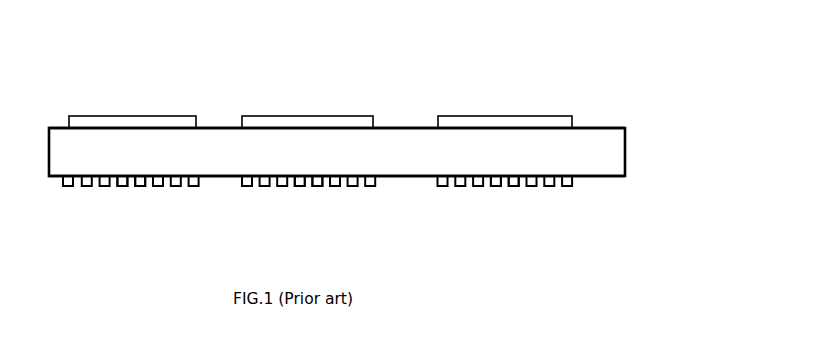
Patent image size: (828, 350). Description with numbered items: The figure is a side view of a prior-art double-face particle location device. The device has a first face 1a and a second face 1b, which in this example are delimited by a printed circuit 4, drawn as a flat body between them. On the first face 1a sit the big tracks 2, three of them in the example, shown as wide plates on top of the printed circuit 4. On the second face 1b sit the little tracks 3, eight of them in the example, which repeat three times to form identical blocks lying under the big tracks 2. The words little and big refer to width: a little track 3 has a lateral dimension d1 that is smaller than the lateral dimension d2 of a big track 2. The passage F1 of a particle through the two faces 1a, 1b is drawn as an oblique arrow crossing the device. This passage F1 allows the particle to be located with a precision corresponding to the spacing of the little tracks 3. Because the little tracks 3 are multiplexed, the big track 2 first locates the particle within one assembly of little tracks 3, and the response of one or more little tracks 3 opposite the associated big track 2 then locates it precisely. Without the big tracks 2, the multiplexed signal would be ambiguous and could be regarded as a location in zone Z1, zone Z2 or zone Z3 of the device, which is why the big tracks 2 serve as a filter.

The first face 1a is at (598, 115).
The second face 1b is at (586, 187).
The big track 2 is at (469, 123).
The little track 3 is at (481, 188).
The printed circuit 4 is at (603, 152).
The lateral dimension of little track d1 is at (90, 202).
The lateral dimension of big track d2 is at (196, 103).
The zone Z1 is at (147, 189).
The zone Z2 is at (324, 189).
The zone Z3 is at (492, 189).
The passage of a particle F1 is at (325, 238).